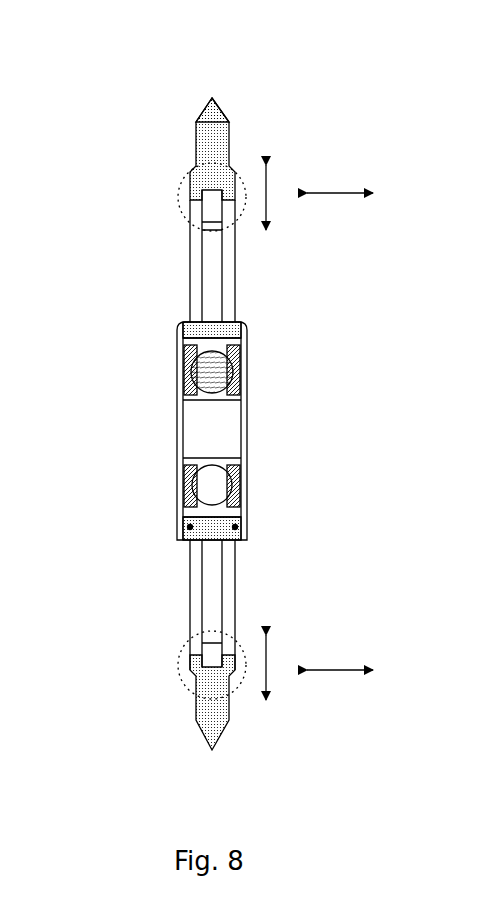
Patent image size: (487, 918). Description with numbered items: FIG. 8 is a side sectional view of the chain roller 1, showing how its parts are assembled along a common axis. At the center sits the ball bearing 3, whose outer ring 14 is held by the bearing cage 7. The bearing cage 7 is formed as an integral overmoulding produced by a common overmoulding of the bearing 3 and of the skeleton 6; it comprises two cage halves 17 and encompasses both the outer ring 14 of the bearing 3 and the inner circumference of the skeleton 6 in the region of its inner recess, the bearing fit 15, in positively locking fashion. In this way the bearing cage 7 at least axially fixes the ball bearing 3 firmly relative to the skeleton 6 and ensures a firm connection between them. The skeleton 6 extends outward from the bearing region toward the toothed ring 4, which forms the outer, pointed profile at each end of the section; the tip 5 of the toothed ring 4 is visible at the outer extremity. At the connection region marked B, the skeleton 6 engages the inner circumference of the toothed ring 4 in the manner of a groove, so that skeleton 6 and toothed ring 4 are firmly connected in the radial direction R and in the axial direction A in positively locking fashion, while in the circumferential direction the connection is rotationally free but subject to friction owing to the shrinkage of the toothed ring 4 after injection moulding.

The device 1 is at (356, 88).
The ball bearing 3 is at (155, 371).
The toothed ring 4 is at (178, 158).
The tip point 5 is at (215, 140).
The skeleton 6 is at (177, 251).
The bearing cage 7 is at (283, 322).
The outer ring 14 is at (236, 514).
The inner recess 15 is at (214, 326).
The cage halves 17 is at (188, 527).